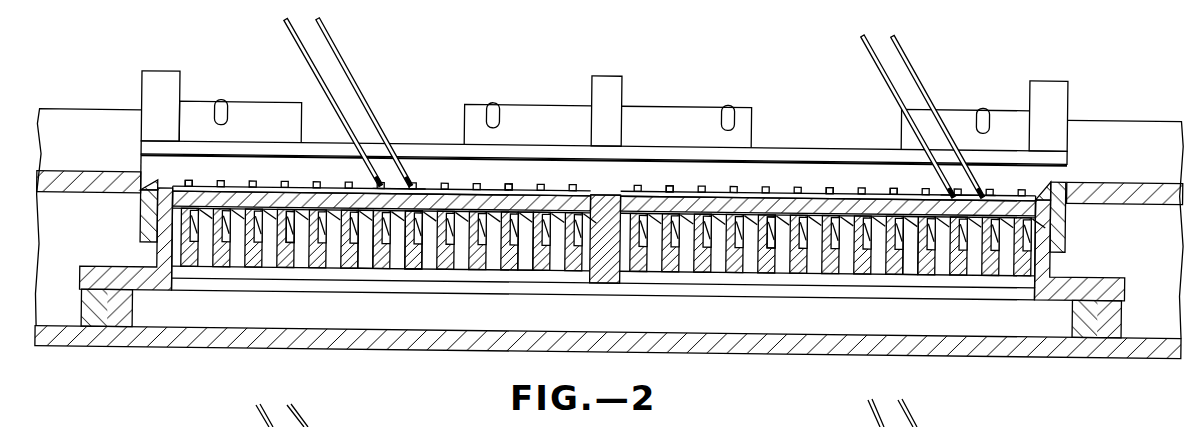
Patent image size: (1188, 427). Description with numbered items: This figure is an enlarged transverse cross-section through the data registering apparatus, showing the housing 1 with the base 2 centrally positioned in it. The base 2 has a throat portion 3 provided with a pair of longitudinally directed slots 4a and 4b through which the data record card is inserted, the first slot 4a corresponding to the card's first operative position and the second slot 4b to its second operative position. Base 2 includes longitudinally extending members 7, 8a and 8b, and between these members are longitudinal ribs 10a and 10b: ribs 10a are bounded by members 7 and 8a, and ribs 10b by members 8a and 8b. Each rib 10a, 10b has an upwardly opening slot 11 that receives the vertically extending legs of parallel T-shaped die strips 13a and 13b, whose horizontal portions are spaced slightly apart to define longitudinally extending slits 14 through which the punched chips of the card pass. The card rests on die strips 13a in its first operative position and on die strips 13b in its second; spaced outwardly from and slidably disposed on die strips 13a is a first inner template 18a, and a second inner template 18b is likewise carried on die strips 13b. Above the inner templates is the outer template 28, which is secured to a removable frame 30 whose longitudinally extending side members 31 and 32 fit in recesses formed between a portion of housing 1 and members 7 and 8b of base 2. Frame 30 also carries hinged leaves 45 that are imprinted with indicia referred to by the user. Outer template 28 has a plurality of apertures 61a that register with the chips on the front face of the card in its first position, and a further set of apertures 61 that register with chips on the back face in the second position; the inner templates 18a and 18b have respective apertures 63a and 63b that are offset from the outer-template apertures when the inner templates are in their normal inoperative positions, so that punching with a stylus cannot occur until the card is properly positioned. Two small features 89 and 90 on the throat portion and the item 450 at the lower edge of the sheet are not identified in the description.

The housing 1 is at (1012, 352).
The base 2 is at (565, 288).
The throat portion 3 is at (437, 70).
The longitudinally directed slot 4a is at (438, 146).
The longitudinally directed slot 4b is at (793, 146).
The longitudinally extending member 7 is at (165, 257).
The longitudinally extending member 8a is at (607, 265).
The longitudinally extending member 8b is at (1048, 266).
The ribs 10a is at (190, 250).
The ribs 10b is at (828, 258).
The upwardly opening slot 11 is at (364, 245).
The T-shaped die strips 13a is at (290, 248).
The T-shaped die strips 13b is at (770, 248).
The longitudinally extending slits 14 is at (206, 170).
The first inner template 18a is at (410, 192).
The second inner template 18b is at (846, 192).
The outer template 28 is at (598, 196).
The frame 30 is at (157, 182).
The side member 31 is at (1060, 226).
The side member 32 is at (146, 212).
The leaves 45 is at (337, 57).
The insulating strip 61 is at (752, 198).
The apertures 61a is at (262, 200).
The apertures 63a is at (272, 208).
The apertures 63b is at (716, 200).
The locating pin 89 is at (220, 104).
The locating pin 90 is at (742, 88).
The probe rods (adjacent figure) 450 is at (308, 420).